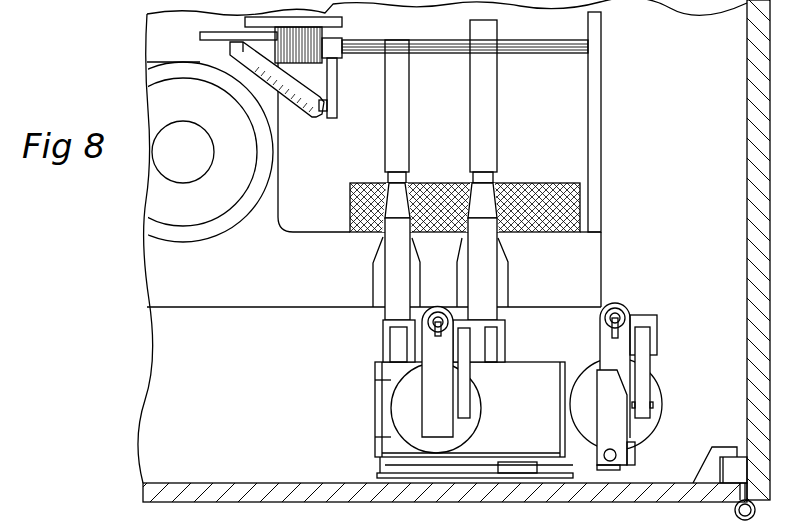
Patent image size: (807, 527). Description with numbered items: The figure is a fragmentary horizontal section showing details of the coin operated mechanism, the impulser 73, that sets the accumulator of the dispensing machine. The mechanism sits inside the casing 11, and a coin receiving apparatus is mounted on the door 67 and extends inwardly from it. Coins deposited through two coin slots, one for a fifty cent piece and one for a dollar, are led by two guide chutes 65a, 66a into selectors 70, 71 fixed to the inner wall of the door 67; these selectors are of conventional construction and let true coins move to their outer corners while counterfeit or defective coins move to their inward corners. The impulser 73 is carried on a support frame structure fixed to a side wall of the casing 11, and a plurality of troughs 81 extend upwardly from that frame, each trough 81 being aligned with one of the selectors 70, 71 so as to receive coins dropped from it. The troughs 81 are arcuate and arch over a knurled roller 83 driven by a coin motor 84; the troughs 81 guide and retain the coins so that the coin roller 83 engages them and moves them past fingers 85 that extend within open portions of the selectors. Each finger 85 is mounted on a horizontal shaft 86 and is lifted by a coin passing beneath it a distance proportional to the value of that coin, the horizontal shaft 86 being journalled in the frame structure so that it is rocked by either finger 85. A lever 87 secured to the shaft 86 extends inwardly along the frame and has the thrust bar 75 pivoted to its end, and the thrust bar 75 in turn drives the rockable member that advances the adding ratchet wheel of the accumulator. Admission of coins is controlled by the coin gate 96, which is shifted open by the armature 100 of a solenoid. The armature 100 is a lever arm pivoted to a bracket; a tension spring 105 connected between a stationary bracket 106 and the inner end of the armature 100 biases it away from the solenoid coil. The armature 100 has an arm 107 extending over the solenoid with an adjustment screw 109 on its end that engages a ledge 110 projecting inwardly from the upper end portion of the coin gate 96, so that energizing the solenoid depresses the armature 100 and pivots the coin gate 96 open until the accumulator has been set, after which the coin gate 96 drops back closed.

The casing 11 is at (767, 259).
The guide chute 65a is at (384, 346).
The guide chute 66a is at (503, 345).
The door 67 is at (377, 494).
The selector 70 is at (385, 317).
The selector 71 is at (501, 317).
The impulser 73 is at (608, 248).
The thrust bar 75 is at (311, 116).
The trough 81 is at (461, 253).
The knurled roller 83 is at (528, 182).
The coin motor 84 is at (220, 227).
The finger 85 is at (385, 137).
The horizontal shaft 86 is at (556, 47).
The lever 87 is at (338, 108).
The coin gate 96 is at (438, 473).
The armature 100 is at (601, 348).
The tension spring 105 is at (622, 313).
The stationary bracket 106 is at (610, 307).
The arm 107 is at (618, 440).
The adjustment screw 109 is at (615, 459).
The ledge 110 is at (632, 462).